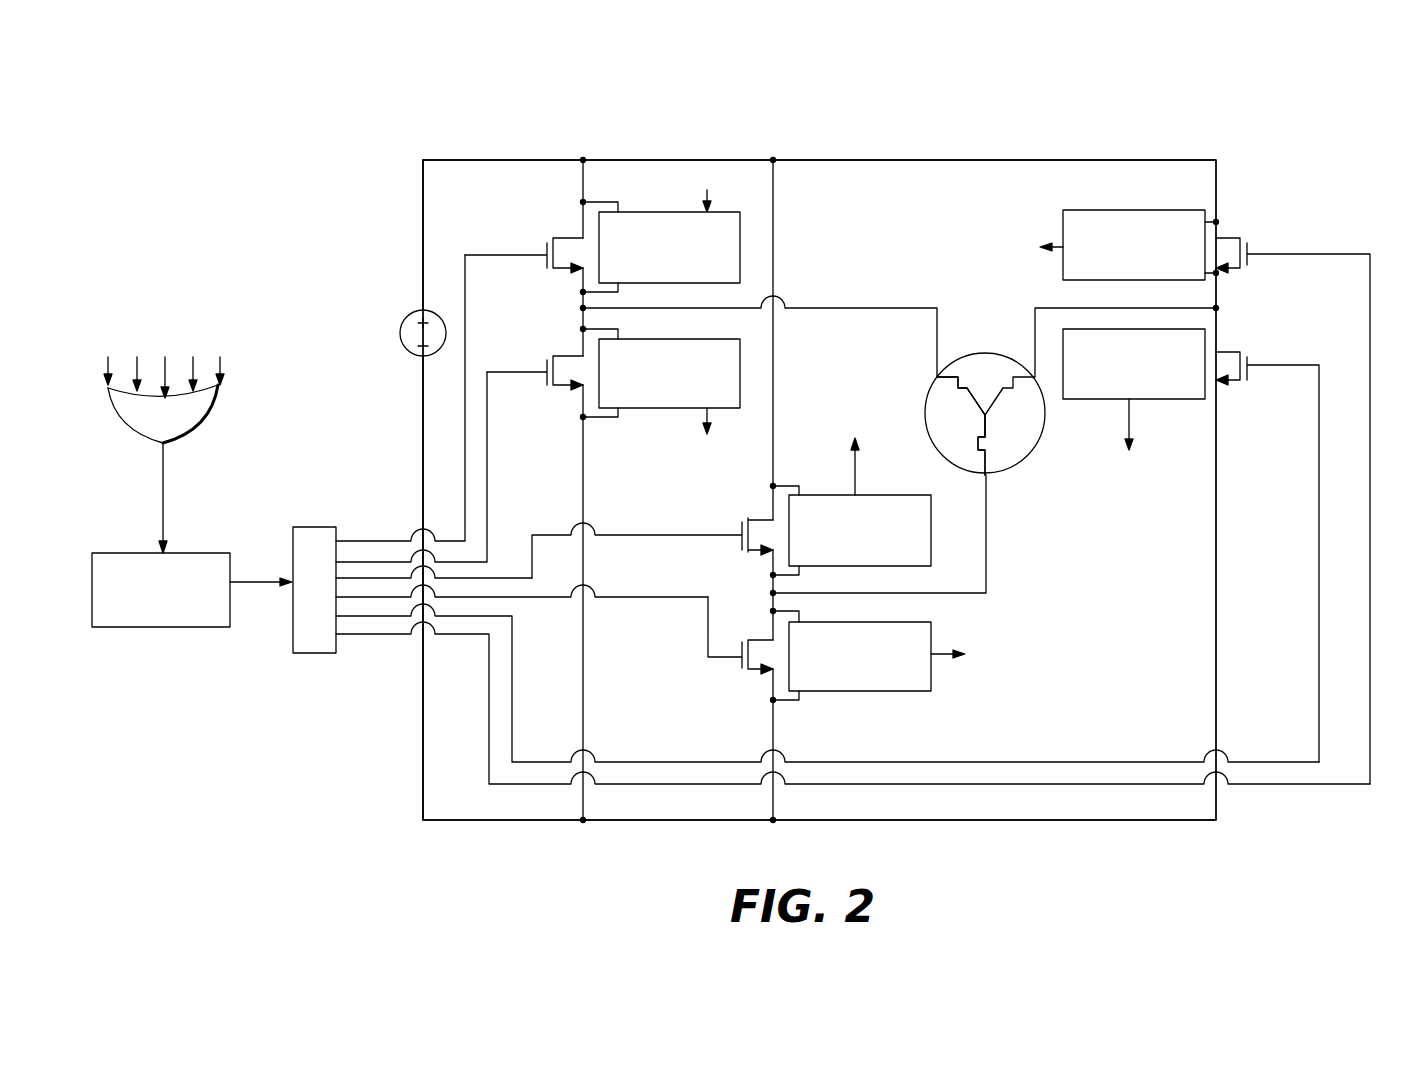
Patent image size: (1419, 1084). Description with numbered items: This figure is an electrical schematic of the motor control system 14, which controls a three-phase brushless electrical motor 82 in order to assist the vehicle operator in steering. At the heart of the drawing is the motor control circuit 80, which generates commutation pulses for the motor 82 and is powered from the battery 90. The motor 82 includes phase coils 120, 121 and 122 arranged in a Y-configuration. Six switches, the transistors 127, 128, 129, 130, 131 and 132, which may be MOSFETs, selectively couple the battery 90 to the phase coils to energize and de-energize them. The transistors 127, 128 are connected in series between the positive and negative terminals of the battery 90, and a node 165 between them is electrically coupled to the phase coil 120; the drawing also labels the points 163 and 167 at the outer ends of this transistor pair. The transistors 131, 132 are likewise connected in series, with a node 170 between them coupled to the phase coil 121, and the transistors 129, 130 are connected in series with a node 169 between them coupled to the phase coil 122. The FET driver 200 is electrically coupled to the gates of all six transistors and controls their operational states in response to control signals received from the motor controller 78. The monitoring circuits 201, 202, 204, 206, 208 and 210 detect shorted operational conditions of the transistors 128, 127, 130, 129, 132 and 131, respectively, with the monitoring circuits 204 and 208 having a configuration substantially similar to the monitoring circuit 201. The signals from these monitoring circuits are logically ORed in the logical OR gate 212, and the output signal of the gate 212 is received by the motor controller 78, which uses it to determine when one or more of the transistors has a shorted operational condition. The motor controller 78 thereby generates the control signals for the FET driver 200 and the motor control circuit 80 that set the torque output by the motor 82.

The motor control system 14 is at (992, 133).
The motor controller 78 is at (110, 552).
The motor control circuit 80 is at (1091, 155).
The motor 82 is at (993, 353).
The battery 90 is at (428, 312).
The phase coil 120 is at (960, 355).
The phase coil 121 is at (971, 389).
The phase coil 122 is at (959, 444).
The transistor 127 is at (556, 238).
The transistor 128 is at (556, 388).
The transistor 129 is at (745, 520).
The transistor 130 is at (755, 672).
The transistor 131 is at (1233, 235).
The transistor 132 is at (1235, 385).
The node 163 is at (586, 202).
The node 165 is at (580, 308).
The node 167 is at (585, 419).
The node 169 is at (851, 505).
The node 170 is at (1222, 310).
The FET driver 200 is at (312, 527).
The monitoring circuit 201 is at (742, 240).
The monitoring circuit 202 is at (742, 378).
The monitoring circuit 204 is at (931, 528).
The monitoring circuit 206 is at (931, 680).
The monitoring circuit 208 is at (1108, 210).
The monitoring circuit 210 is at (1092, 400).
The logical OR gate 212 is at (205, 422).